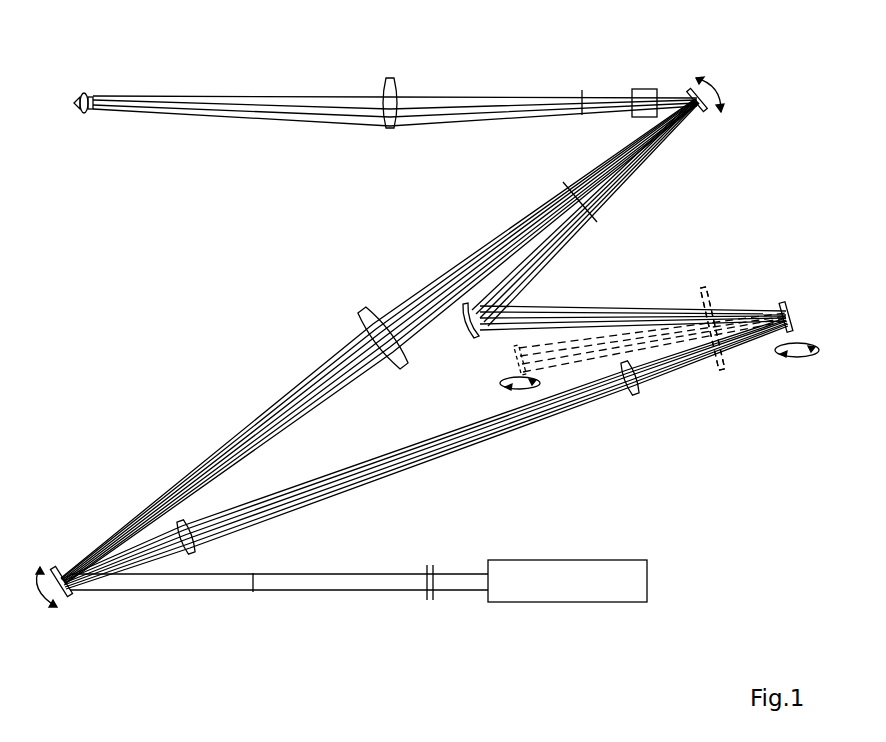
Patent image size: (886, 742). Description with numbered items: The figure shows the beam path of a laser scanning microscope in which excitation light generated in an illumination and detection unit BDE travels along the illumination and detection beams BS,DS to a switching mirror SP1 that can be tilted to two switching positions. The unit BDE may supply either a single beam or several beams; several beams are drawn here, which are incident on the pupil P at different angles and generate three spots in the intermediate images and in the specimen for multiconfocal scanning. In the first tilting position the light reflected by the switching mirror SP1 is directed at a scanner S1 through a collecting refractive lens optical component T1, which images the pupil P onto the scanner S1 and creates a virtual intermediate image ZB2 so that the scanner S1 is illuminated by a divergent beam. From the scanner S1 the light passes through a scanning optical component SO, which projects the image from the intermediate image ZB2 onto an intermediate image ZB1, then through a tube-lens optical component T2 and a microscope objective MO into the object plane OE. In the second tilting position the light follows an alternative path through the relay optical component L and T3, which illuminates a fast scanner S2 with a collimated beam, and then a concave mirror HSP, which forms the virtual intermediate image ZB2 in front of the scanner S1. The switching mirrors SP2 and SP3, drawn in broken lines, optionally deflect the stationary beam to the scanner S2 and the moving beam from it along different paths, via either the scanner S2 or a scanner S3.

The object plane OE is at (57, 104).
The microscope objective MO is at (83, 88).
The tube-lens optical component T2 is at (390, 89).
The intermediate image ZB1 is at (581, 89).
The scanning optical component SO is at (664, 72).
The scanner S1 is at (719, 94).
The intermediate image ZB2 is at (563, 183).
The collecting refractive lens optical component T1 is at (370, 330).
The concave mirror HSP is at (450, 332).
The scanner S3 is at (512, 367).
The switching mirror SP2 is at (702, 315).
The switching mirror SP3 is at (725, 344).
The scanner S2 is at (796, 311).
The relay optical component T3 is at (639, 390).
The relay optical component L is at (193, 552).
The switching mirror SP1 is at (50, 602).
The pupil P is at (247, 597).
The illumination and detection beams BS,DS is at (336, 584).
The illumination and detection unit BDE is at (567, 581).